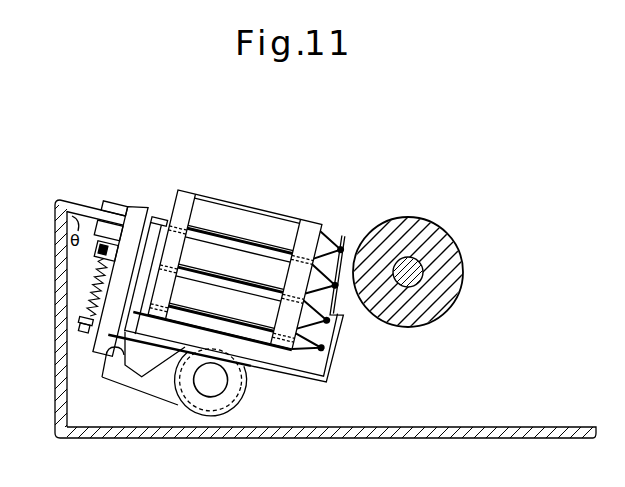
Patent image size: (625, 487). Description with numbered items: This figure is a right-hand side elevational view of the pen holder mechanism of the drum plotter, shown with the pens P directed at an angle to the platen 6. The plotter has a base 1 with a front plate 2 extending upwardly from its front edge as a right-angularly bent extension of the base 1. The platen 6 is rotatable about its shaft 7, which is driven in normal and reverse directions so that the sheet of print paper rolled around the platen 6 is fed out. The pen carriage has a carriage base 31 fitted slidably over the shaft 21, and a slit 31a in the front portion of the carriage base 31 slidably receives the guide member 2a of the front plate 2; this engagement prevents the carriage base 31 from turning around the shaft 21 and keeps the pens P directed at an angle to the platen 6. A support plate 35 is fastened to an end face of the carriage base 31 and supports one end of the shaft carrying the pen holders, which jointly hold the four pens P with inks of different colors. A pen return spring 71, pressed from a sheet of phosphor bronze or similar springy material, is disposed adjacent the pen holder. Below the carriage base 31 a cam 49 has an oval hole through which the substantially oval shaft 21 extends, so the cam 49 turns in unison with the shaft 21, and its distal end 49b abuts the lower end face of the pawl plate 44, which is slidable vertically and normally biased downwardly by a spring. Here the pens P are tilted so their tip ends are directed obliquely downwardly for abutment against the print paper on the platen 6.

The base 1 is at (103, 438).
The front plate 2 is at (56, 372).
The guide member 2a is at (78, 204).
The platen 6 is at (425, 226).
The shaft 7 is at (420, 283).
The shaft 21 is at (214, 384).
The carriage base 31 is at (145, 203).
The slit 31a is at (128, 210).
The support plate 35 is at (338, 336).
The pawl plate 44 is at (112, 349).
The cam 49 is at (147, 388).
The distal end 49b is at (110, 363).
The pen return spring 71 is at (344, 240).
The pens P is at (243, 258).